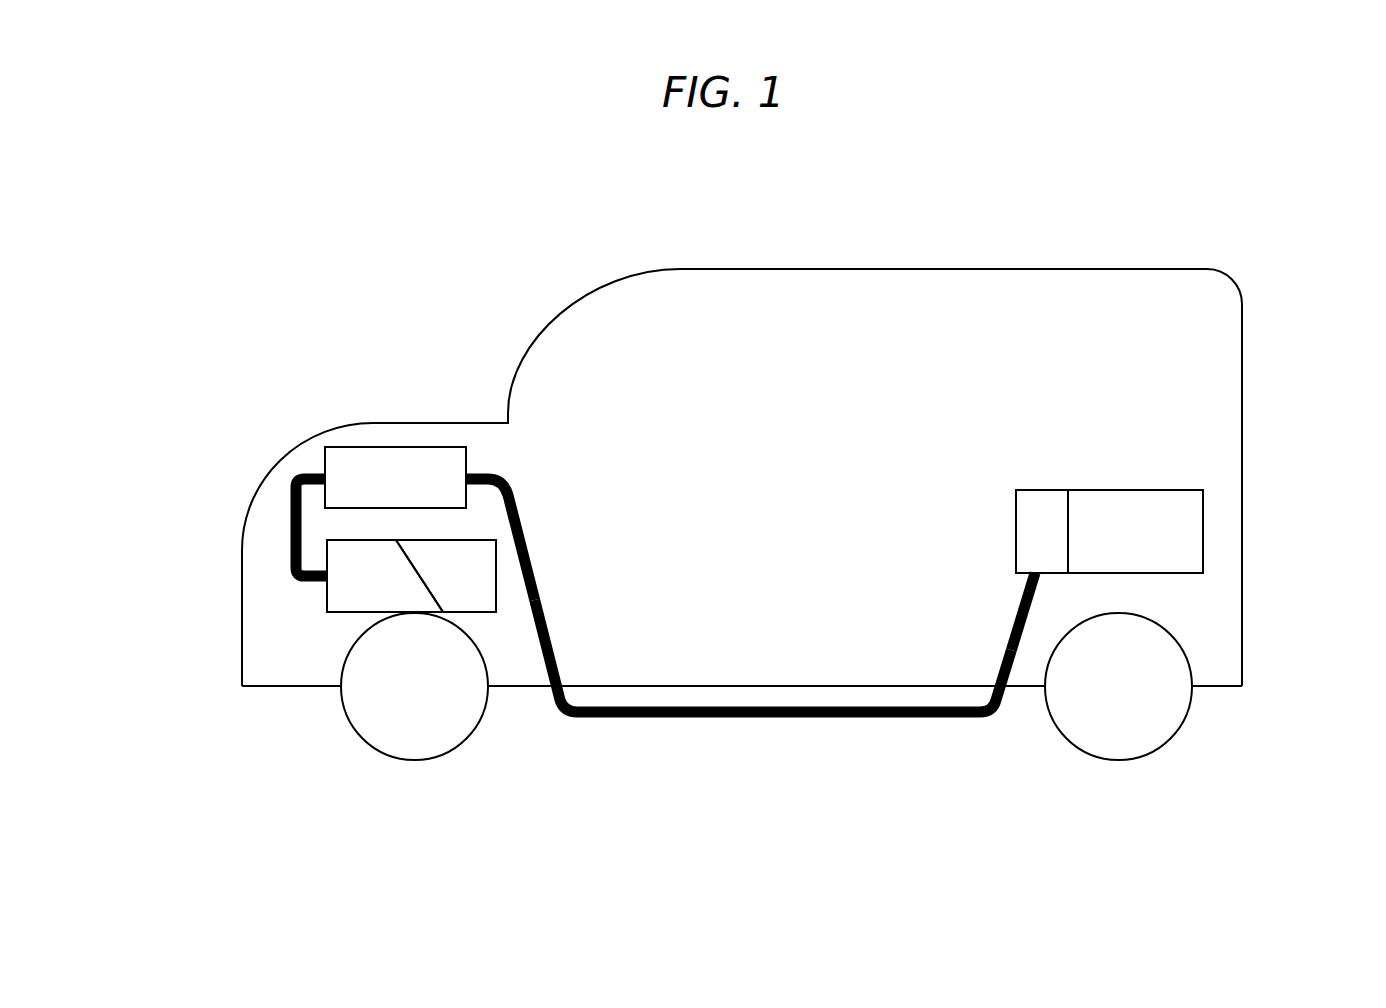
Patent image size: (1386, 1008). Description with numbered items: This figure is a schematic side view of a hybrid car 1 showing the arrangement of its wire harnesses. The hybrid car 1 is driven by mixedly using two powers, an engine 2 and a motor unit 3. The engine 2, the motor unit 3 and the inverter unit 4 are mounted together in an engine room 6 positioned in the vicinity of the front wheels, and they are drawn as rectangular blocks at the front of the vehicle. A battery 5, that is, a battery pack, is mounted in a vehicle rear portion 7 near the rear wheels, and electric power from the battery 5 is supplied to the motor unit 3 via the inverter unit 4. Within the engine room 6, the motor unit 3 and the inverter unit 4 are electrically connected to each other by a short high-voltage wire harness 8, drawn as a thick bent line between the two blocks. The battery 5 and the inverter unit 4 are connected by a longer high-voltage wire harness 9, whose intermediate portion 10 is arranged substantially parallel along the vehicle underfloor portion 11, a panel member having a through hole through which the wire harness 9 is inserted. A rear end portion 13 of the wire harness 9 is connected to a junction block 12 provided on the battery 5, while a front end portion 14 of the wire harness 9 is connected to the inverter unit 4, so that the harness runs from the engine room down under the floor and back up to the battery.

The hybrid car 1 is at (415, 301).
The engine 2 is at (472, 592).
The motor unit 3 is at (345, 593).
The inverter unit 4 is at (362, 467).
The battery 5 is at (1142, 508).
The engine room 6 is at (267, 647).
The vehicle rear portion 7 is at (1208, 607).
The high-voltage wire harness 8 is at (282, 511).
The high-voltage wire harness 9 is at (667, 729).
The intermediate portion 10 is at (807, 721).
The vehicle underfloor portion 11 is at (923, 687).
The junction block 12 is at (1028, 507).
The rear end portion 13 is at (1024, 600).
The front end portion 14 is at (502, 478).